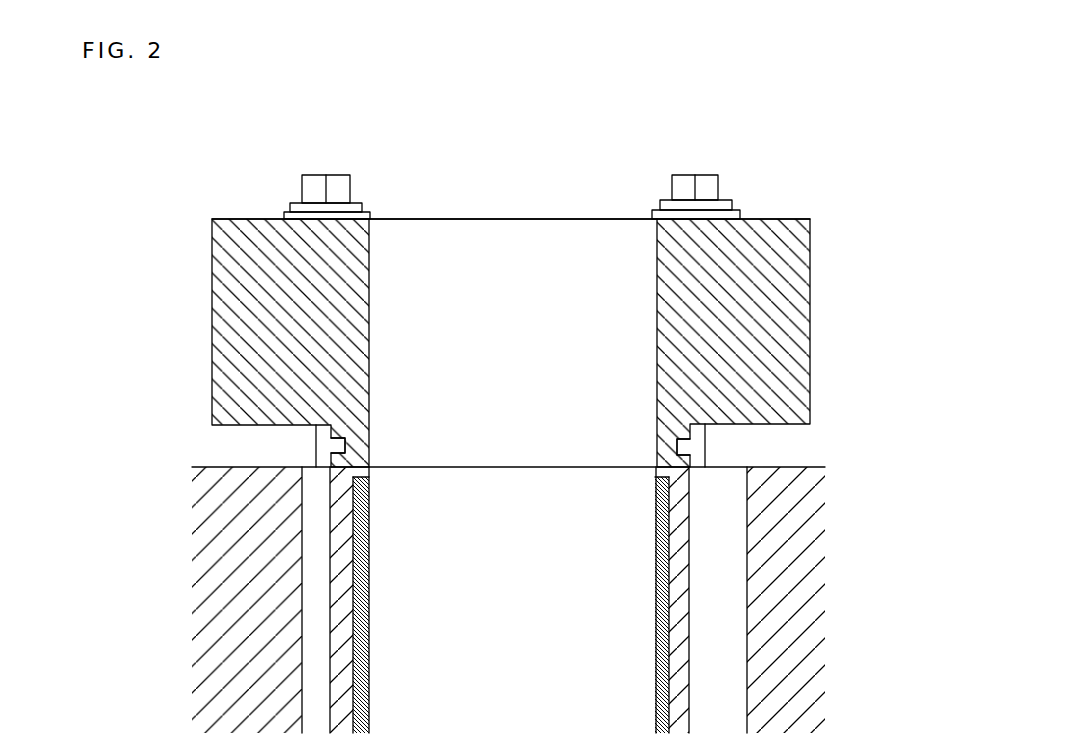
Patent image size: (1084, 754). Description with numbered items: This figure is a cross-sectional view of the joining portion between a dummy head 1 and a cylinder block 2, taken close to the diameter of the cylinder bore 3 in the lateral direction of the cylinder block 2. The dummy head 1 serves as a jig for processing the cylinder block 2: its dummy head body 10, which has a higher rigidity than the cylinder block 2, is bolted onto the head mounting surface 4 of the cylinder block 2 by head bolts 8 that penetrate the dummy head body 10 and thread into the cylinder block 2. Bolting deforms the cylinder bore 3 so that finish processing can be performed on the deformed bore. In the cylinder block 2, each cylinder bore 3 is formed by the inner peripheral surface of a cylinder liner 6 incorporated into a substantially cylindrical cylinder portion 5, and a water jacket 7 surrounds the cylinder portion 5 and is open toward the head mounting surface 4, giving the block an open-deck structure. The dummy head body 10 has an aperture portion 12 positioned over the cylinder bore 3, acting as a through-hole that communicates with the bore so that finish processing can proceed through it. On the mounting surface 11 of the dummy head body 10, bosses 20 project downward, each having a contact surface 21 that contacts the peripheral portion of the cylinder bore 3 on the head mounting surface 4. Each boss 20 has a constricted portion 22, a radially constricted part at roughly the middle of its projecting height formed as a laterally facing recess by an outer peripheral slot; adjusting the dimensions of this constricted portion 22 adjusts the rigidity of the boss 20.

The dummy head 1 is at (186, 254).
The cylinder block 2 is at (170, 572).
The cylinder bore 3 is at (499, 603).
The head mounting surface 4 is at (202, 466).
The cylinder portion 5 is at (700, 577).
The cylinder liner 6 is at (366, 682).
The water jacket 7 is at (305, 658).
The head bolt 8 is at (326, 175).
The dummy head body 10 is at (815, 297).
The mounting surface 11 is at (249, 435).
The aperture portion 12 is at (499, 353).
The boss 20 is at (700, 444).
The contact surface 21 is at (340, 468).
The constricted portion 22 is at (340, 445).